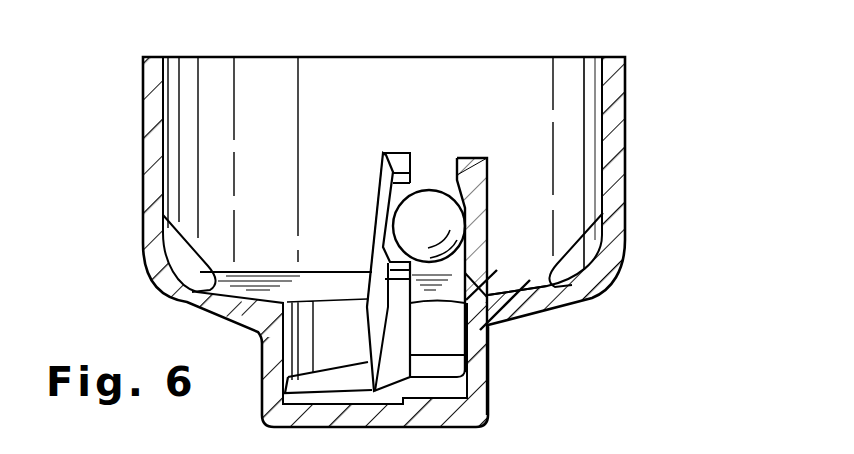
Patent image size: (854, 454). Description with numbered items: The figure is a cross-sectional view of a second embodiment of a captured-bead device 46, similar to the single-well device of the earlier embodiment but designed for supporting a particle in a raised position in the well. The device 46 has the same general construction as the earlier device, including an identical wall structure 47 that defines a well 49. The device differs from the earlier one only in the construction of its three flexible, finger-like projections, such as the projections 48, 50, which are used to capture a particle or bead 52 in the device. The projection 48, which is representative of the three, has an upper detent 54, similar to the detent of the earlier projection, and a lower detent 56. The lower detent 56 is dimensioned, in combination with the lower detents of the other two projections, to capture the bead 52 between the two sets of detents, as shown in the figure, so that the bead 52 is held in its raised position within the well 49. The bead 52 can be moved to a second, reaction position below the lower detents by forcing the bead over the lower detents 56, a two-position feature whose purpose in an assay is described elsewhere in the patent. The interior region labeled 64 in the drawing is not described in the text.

The captured-bead device 46 is at (642, 89).
The wall structure 47 is at (644, 182).
The projection 48 is at (483, 180).
The well 49 is at (351, 325).
The projection 50 is at (378, 227).
The bead 52 is at (430, 196).
The upper detent 54 is at (460, 178).
The lower detent 56 is at (466, 272).
The interior chamber of cap 64 is at (313, 90).